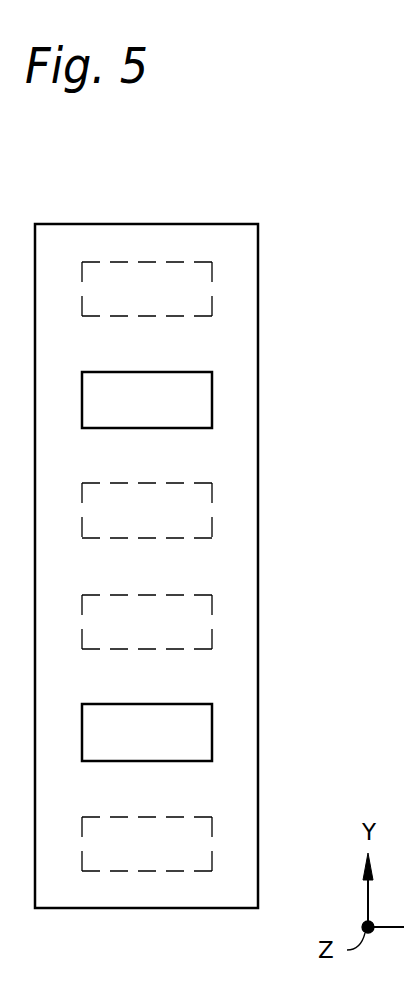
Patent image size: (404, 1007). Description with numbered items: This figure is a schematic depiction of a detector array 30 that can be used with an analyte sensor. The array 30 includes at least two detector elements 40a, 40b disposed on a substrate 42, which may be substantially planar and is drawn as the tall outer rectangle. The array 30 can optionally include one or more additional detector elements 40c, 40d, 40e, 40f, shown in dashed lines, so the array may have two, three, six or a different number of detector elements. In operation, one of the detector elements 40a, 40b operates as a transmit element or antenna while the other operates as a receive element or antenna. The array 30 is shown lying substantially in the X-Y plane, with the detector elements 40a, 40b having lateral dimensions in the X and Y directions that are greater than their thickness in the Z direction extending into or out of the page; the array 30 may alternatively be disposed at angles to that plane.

The detector array 30 is at (193, 521).
The substrate 42 is at (133, 240).
The detector element 40a is at (212, 387).
The detector element 40b is at (212, 720).
The additional detector element 40c is at (212, 283).
The additional detector element 40d is at (212, 504).
The additional detector element 40e is at (212, 615).
The additional detector element 40f is at (212, 836).